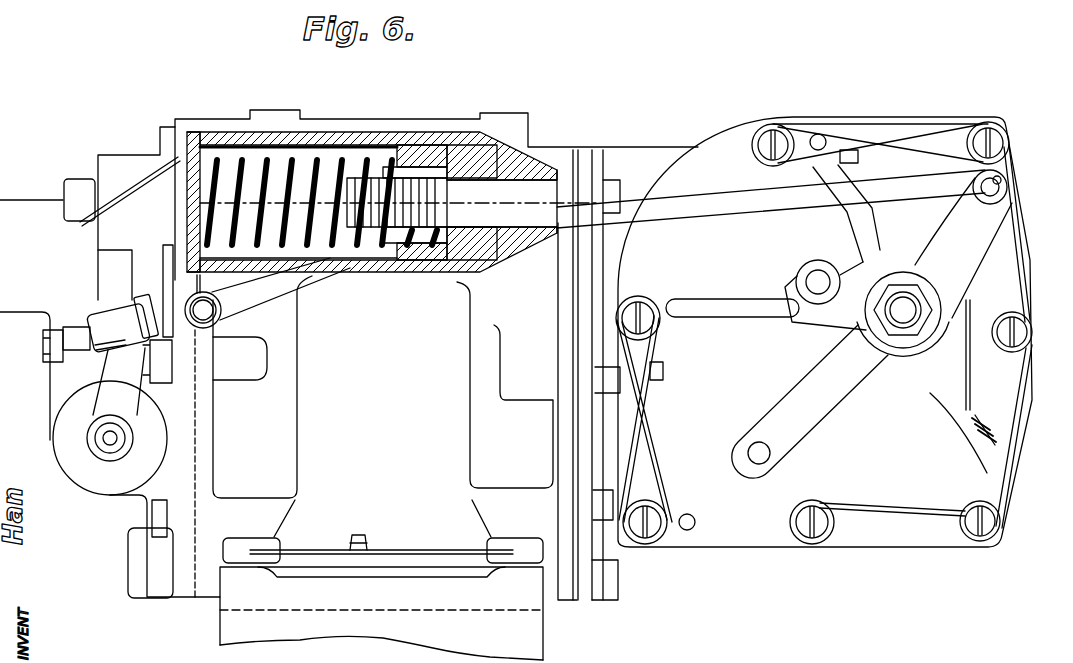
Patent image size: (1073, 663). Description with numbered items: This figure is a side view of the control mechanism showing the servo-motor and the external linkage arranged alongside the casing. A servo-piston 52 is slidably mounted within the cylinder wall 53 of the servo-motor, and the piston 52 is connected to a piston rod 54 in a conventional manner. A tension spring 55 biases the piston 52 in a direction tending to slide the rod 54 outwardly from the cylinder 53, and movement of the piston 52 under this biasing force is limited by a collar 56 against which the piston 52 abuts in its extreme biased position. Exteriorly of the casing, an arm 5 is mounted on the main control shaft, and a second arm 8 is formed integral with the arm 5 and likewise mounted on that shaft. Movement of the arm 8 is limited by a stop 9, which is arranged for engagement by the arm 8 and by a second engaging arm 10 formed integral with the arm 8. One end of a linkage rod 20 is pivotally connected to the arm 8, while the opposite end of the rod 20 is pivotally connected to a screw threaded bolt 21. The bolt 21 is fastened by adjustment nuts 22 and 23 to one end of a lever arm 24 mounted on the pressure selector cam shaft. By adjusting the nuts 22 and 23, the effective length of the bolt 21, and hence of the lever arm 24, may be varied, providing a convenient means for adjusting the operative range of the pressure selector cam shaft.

The arm 5 is at (826, 393).
The second arm 8 is at (975, 236).
The stop 9 is at (808, 277).
The second engaging arm 10 is at (828, 315).
The linkage rod 20 is at (623, 205).
The screw threaded bolt 21 is at (183, 304).
The adjustment nut 22 is at (138, 308).
The adjustment nut 23 is at (75, 316).
The lever arm 24 is at (115, 380).
The servo-piston 52 is at (441, 148).
The cylinder wall 53 is at (362, 143).
The piston rod 54 is at (528, 190).
The tension spring 55 is at (298, 160).
The collar 56 is at (483, 160).